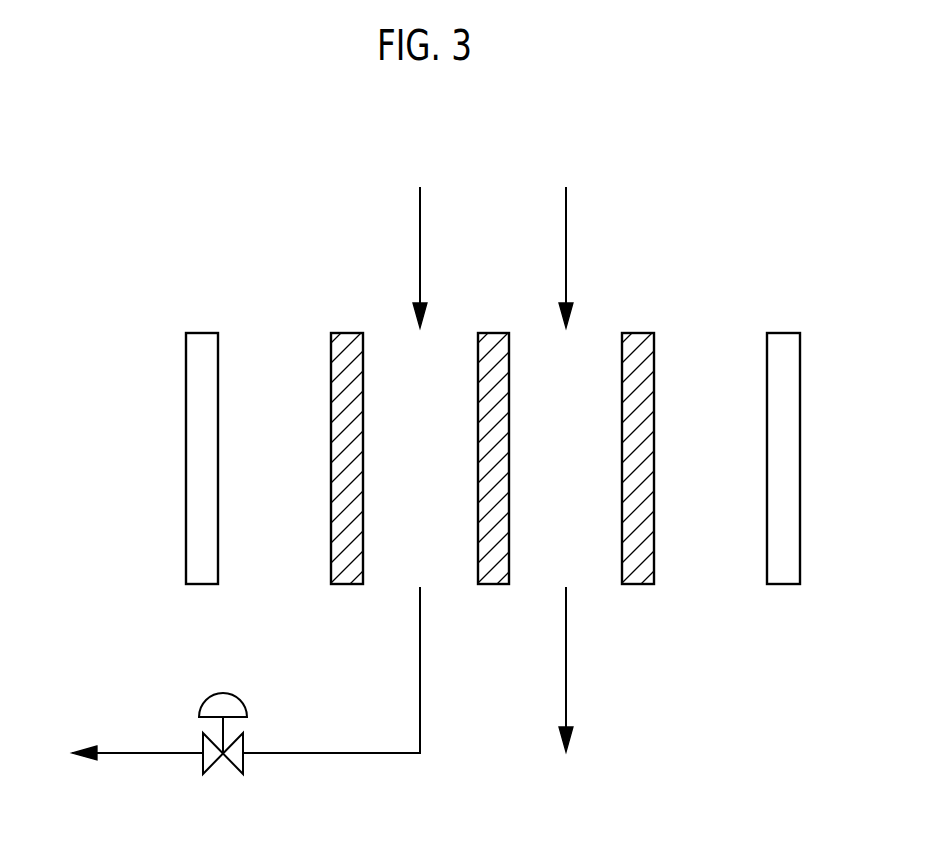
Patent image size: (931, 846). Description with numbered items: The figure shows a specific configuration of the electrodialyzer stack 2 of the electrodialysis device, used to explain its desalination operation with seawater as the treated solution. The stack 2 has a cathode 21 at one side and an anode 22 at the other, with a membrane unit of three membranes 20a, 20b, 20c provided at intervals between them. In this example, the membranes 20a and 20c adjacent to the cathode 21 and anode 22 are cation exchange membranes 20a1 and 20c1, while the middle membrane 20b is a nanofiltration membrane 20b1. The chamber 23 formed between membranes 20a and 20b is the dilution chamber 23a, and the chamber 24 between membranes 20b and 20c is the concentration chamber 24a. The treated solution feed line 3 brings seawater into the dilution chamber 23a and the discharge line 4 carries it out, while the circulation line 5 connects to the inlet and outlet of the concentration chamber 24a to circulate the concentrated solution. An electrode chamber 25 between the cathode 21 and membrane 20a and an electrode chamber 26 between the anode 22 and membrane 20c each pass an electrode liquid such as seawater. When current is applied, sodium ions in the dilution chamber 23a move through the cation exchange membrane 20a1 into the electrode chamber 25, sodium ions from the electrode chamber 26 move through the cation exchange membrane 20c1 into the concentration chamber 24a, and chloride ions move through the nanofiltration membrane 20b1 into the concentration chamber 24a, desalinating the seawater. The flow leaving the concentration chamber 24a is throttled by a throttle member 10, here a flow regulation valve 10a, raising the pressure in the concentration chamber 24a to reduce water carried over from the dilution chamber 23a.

The electrodialyzer stack 2 is at (164, 141).
The treated solution feed line 3 is at (567, 208).
The discharge line 4 is at (568, 648).
The circulation line 5 is at (422, 208).
The throttle member 10 is at (223, 693).
The flow regulation valve 10a is at (243, 696).
The membrane 20a is at (636, 419).
The cation exchange membrane 20a1 is at (637, 333).
The membrane 20b is at (491, 419).
The nanofiltration membrane 20b1 is at (491, 333).
The membrane 20c is at (349, 419).
The cation exchange membrane 20c1 is at (347, 333).
The cathode 21 is at (779, 333).
The anode 22 is at (198, 333).
The chamber 23 is at (566, 486).
The dilution chamber 23a is at (588, 458).
The chamber 24 is at (421, 486).
The concentration chamber 24a is at (441, 458).
The electrode chamber 25 is at (724, 458).
The electrode chamber 26 is at (288, 458).